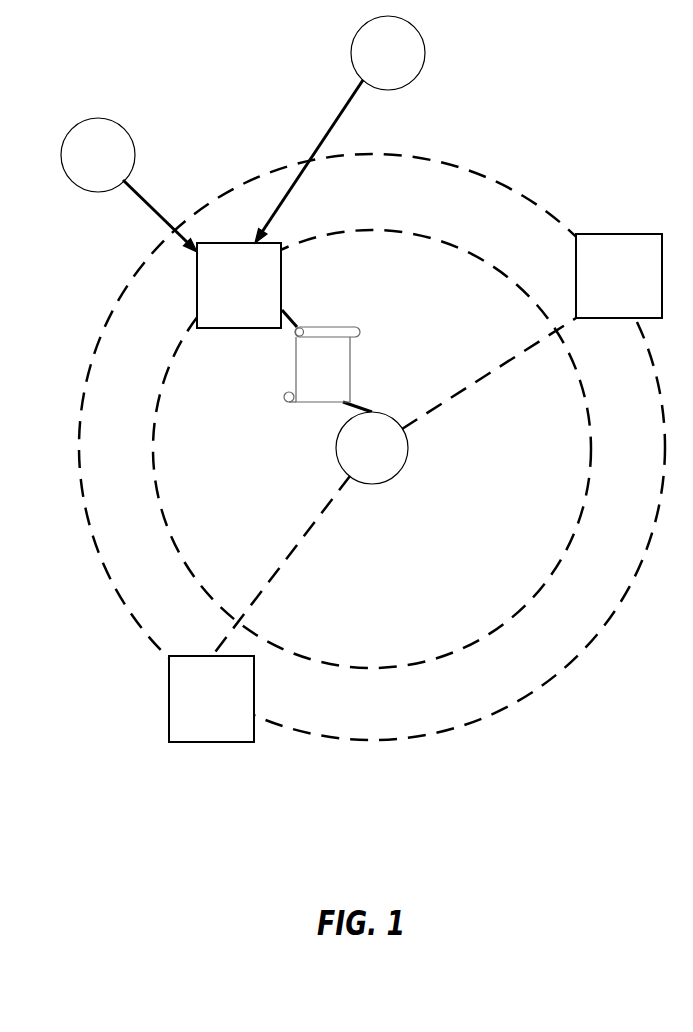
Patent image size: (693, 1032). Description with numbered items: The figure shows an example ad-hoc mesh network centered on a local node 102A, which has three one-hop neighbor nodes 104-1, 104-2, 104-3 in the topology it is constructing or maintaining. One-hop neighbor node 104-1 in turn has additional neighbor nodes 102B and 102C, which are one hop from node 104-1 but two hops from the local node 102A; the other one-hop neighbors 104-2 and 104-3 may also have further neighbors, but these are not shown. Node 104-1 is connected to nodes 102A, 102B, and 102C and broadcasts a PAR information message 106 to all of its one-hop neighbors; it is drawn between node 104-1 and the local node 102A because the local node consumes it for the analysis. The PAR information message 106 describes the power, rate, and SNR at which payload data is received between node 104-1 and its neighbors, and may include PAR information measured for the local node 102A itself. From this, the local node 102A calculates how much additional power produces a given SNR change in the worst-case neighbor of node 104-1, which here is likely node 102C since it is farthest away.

The local node 102A is at (348, 459).
The one-hop neighbor node of node 104-1 102B is at (74, 166).
The one-hop neighbor node of node 104-1 102C is at (364, 64).
The one-hop neighbor node 104-1 is at (214, 296).
The one-hop neighbor node 104-2 is at (187, 710).
The one-hop neighbor node 104-3 is at (594, 287).
The PAR information message 106 is at (296, 364).